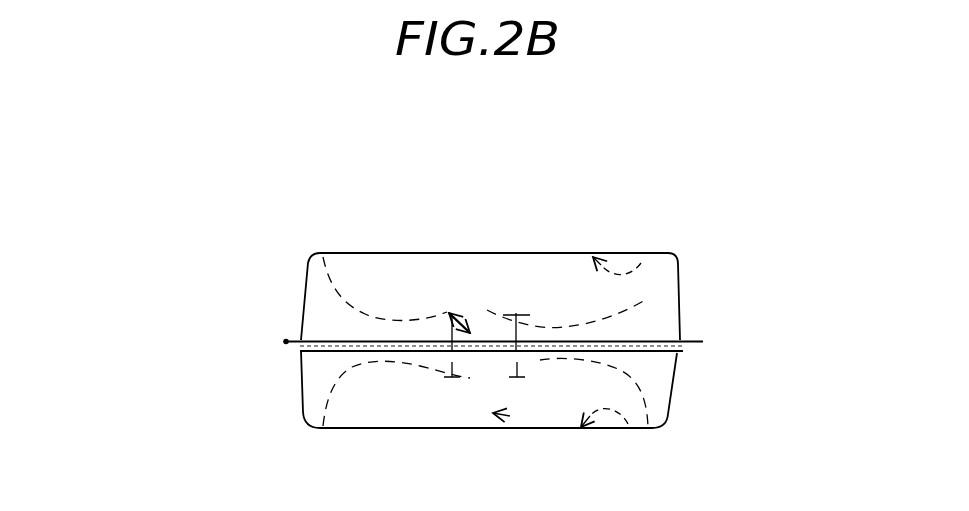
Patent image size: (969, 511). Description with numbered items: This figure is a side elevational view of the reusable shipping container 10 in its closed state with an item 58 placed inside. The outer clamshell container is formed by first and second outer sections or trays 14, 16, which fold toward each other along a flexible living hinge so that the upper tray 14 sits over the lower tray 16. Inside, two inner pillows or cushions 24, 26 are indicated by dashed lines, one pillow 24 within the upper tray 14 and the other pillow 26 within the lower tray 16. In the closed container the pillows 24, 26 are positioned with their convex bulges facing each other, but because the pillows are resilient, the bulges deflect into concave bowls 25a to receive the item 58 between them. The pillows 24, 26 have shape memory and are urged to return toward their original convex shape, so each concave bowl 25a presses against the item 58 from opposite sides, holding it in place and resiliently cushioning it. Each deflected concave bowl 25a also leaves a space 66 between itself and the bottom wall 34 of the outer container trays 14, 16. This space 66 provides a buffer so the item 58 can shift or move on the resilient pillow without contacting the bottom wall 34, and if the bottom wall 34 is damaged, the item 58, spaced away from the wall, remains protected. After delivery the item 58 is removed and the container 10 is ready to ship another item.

The reusable shipping container 10 is at (238, 185).
The first outer section or tray 14 is at (305, 288).
The second outer section or tray 16 is at (302, 378).
The inner pillow or cushion 24 is at (646, 301).
The concave bowl 25a is at (483, 305).
The inner pillow or cushion 26 is at (645, 397).
The bottom wall 34 is at (646, 300).
The item 58 is at (446, 307).
The space 66 is at (510, 416).